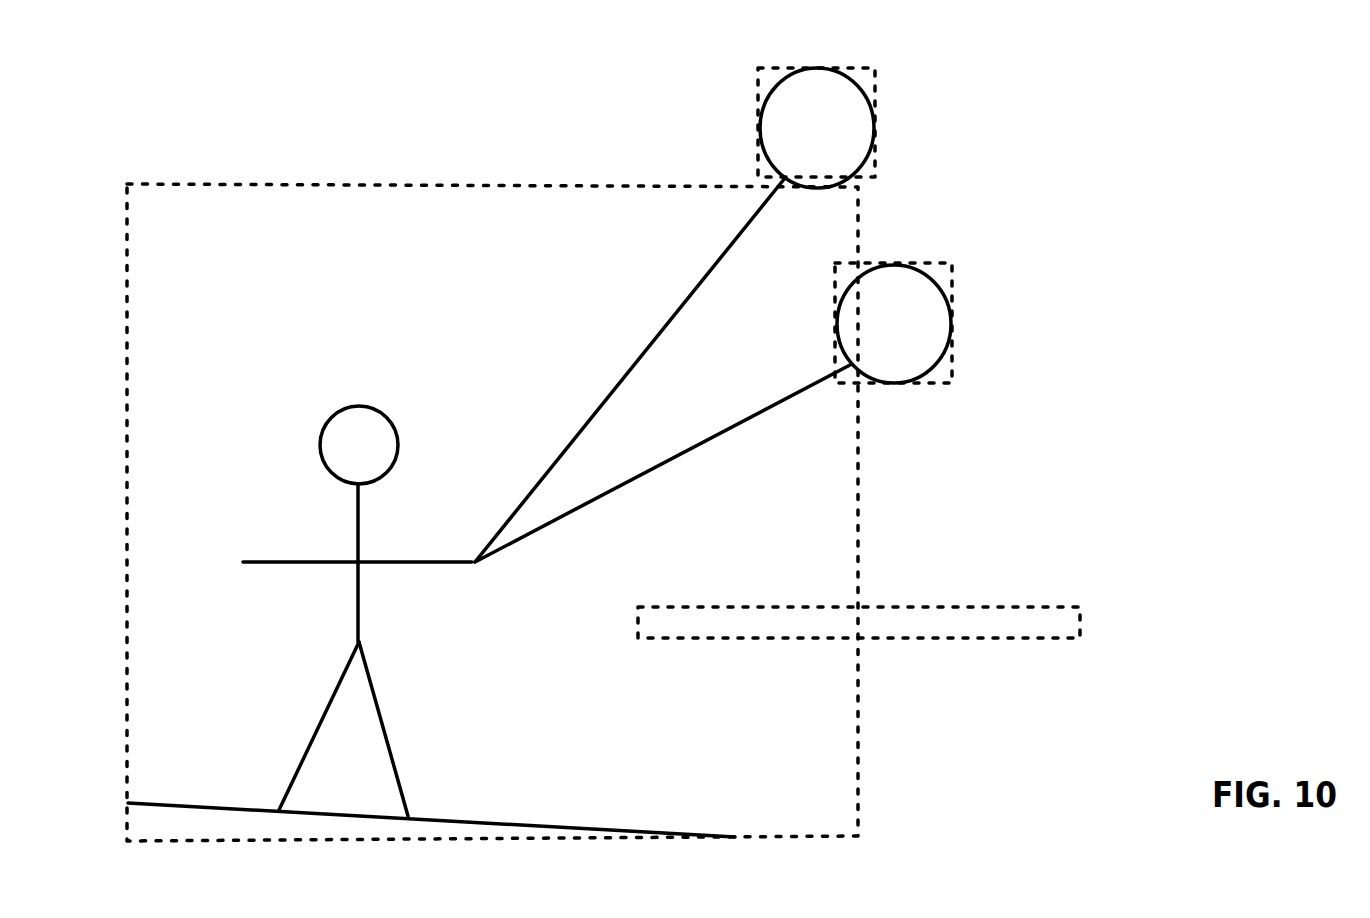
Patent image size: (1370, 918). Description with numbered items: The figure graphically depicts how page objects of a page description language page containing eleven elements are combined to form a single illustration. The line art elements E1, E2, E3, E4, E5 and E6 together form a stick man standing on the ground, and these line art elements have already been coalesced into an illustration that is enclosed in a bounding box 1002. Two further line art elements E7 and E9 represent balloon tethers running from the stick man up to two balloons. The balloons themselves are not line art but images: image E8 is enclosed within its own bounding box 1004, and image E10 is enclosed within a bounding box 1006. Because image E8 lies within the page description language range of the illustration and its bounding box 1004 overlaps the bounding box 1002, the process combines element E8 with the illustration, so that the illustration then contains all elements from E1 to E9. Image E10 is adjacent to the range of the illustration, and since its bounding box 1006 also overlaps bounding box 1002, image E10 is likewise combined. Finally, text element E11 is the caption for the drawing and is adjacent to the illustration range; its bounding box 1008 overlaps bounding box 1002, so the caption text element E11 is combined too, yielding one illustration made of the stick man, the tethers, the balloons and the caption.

The bounding box of illustration I3 1002 is at (294, 184).
The bounding box of image E8 1004 is at (875, 165).
The bounding box of image E10 1006 is at (951, 375).
The bounding box of text element E11 1008 is at (913, 607).
The PDL line art element E1 is at (357, 405).
The PDL line art element E2 is at (356, 522).
The PDL line art element E3 is at (243, 562).
The PDL line art element E4 is at (326, 705).
The PDL line art element E5 is at (392, 710).
The PDL line art element E6 is at (206, 802).
The balloon tether line art element E7 is at (608, 405).
The balloon image element E8 is at (845, 72).
The balloon tether line art element E9 is at (742, 418).
The balloon image element E10 is at (923, 270).
The caption text element E11 is at (1037, 608).